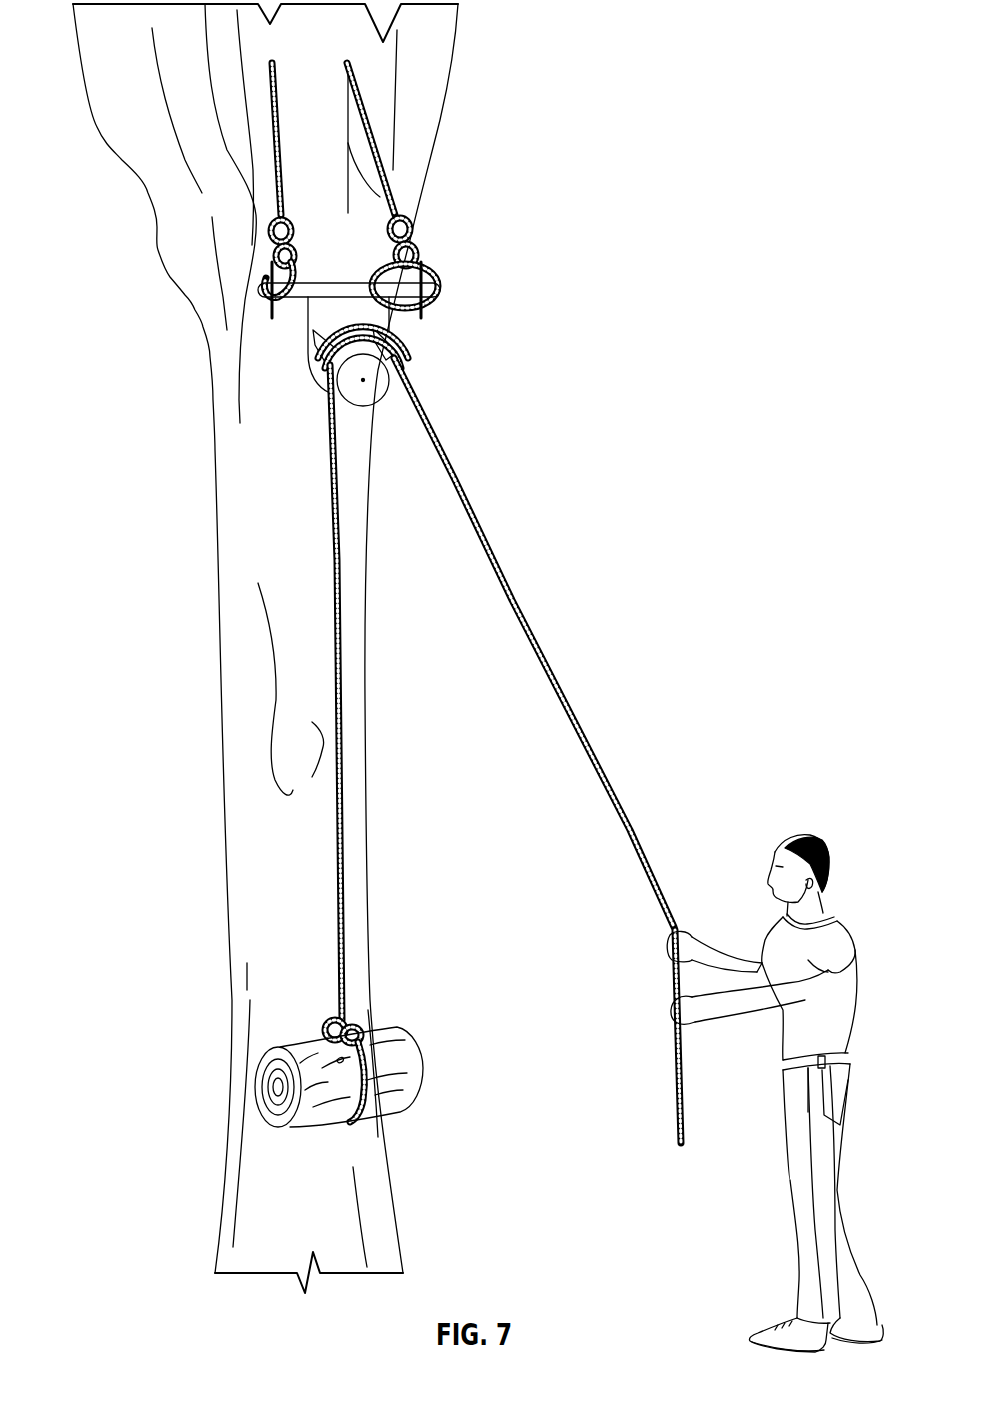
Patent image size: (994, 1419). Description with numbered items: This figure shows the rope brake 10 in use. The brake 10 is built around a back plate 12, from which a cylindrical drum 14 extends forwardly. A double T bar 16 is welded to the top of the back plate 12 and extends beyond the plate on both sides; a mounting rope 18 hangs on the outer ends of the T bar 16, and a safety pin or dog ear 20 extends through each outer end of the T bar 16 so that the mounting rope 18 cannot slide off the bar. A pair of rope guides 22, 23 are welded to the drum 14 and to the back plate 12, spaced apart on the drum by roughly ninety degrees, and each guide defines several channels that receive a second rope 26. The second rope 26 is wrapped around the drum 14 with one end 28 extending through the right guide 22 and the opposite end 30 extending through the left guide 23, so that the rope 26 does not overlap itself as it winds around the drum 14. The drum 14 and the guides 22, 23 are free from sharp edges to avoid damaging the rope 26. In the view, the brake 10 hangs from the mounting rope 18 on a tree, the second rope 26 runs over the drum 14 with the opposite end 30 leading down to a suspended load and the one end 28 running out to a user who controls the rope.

The rope brake 10 is at (300, 456).
The back plate 12 is at (395, 305).
The cylindrical drum 14 is at (385, 402).
The double T bar 16 is at (343, 285).
The mounting rope 18 is at (390, 175).
The safety pin or dog ear 20 is at (258, 262).
The rope guide 22 is at (312, 345).
The rope guide 23 is at (392, 340).
The second rope 26 is at (498, 557).
The one end of the second rope 28 is at (630, 845).
The opposite end of the second rope 30 is at (347, 978).